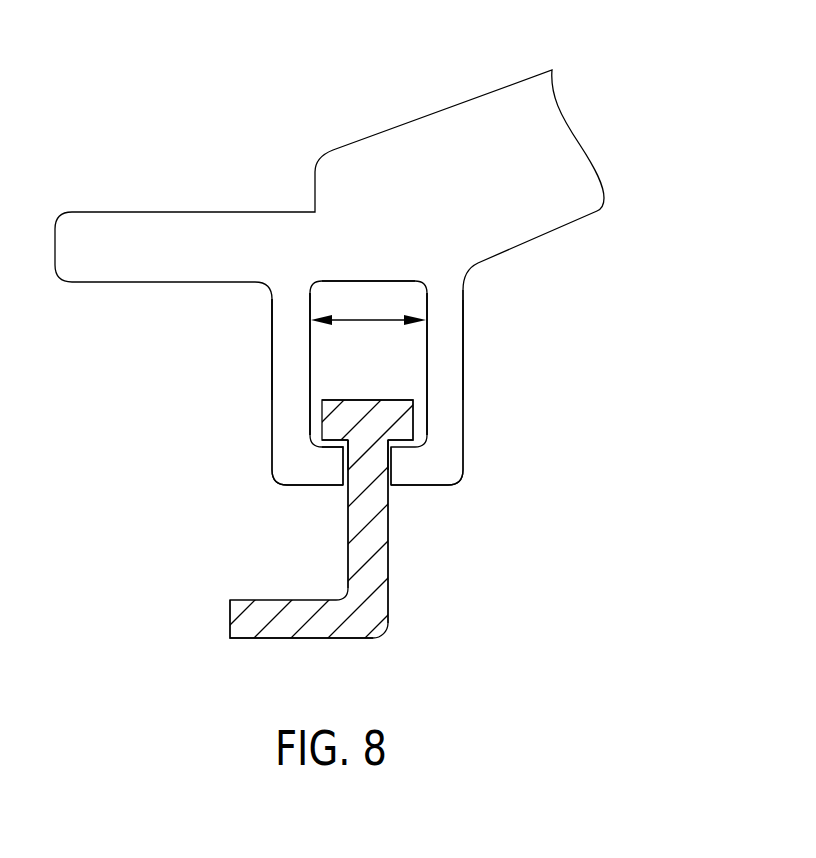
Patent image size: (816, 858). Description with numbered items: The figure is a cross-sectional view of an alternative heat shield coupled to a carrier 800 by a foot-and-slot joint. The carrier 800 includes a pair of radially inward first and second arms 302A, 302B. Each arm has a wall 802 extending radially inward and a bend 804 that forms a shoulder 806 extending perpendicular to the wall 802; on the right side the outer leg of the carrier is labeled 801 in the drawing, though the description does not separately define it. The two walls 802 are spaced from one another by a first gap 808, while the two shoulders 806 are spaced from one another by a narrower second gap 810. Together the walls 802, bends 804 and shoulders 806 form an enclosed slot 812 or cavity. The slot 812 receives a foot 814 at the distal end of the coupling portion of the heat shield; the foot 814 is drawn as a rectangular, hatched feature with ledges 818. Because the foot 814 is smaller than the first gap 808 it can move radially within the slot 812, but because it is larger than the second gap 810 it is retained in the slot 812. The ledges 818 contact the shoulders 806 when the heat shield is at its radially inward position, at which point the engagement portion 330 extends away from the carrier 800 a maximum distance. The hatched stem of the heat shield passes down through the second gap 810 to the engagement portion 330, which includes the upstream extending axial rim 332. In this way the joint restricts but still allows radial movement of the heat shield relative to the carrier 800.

The carrier 800 is at (442, 128).
The second leg 801 is at (442, 368).
The walls 802 is at (290, 368).
The bends 804 is at (290, 460).
The shoulders 806 is at (327, 465).
The first gap 808 is at (390, 317).
The second gap 810 is at (388, 468).
The slot 812 is at (349, 330).
The foot 814 is at (368, 400).
The ledges 818 is at (345, 442).
The first arm 302A is at (246, 316).
The second arm 302B is at (497, 317).
The engagement portion 330 is at (389, 630).
The upstream extending axial rim 332 is at (282, 628).